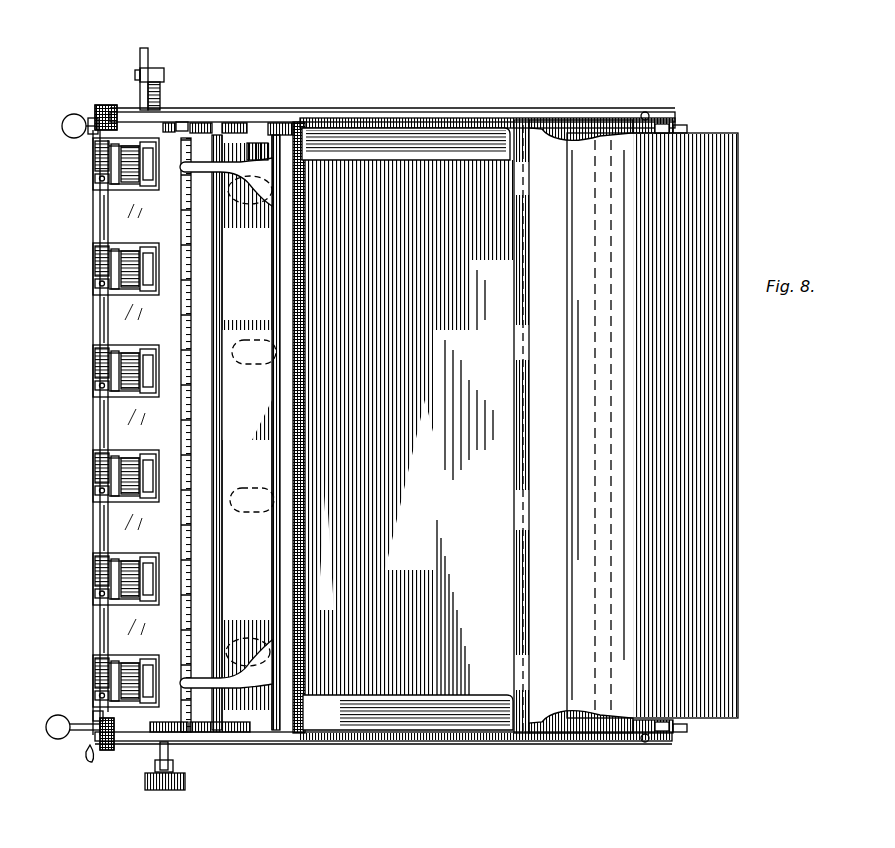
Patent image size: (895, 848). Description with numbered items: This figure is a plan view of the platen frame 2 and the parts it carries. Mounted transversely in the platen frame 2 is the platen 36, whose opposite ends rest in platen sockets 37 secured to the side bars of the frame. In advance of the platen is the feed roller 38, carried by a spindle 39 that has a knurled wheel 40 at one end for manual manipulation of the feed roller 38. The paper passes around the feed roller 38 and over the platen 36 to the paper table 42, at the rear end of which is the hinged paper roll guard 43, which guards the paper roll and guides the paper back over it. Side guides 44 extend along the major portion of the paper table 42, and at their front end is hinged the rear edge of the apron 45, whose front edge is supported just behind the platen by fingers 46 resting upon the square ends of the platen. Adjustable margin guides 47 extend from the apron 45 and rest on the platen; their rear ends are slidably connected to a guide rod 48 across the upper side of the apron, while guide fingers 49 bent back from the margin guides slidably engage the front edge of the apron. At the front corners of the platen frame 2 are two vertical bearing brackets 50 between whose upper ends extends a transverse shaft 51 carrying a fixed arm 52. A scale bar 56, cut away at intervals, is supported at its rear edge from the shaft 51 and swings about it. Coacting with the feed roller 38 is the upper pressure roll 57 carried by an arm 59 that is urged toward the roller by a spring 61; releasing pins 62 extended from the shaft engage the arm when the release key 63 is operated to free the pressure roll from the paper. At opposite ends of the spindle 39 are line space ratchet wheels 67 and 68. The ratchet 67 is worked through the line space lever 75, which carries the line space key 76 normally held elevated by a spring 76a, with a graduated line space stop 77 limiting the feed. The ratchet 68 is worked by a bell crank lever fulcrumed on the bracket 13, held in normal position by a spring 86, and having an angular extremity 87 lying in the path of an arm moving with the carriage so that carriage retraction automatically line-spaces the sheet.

The platen frame 2 is at (322, 114).
The bracket 13 is at (147, 58).
The platen 36 is at (204, 124).
The platen sockets 37 is at (172, 123).
The feed roller 38 is at (110, 180).
The spindle 39 is at (170, 760).
The knurled wheel 40 is at (152, 790).
The paper table 42 is at (409, 427).
The paper roll guard 43 is at (712, 138).
The side guides 44 is at (400, 130).
The apron 45 is at (224, 548).
The fingers 46 is at (230, 125).
The margin guides 47 is at (249, 423).
The guide rod 48 is at (246, 432).
The guide fingers 49 is at (252, 160).
The bearing brackets 50 is at (99, 108).
The transverse shaft 51 is at (95, 255).
The arm 52 is at (93, 136).
The scale bar 56 is at (97, 328).
The upper pressure roll 57 is at (148, 190).
The arm 59 is at (130, 186).
The springs 61 is at (95, 170).
The releasing pins 62 is at (95, 353).
The release key 63 is at (63, 124).
The line space ratchet wheel 67 is at (185, 734).
The line space ratchet wheel 68 is at (184, 122).
The line space lever 75 is at (82, 740).
The line space key 76 is at (48, 737).
The spring 76a is at (92, 715).
The line space stop 77 is at (90, 758).
The spring 86 is at (161, 94).
The angular extremity 87 is at (164, 75).